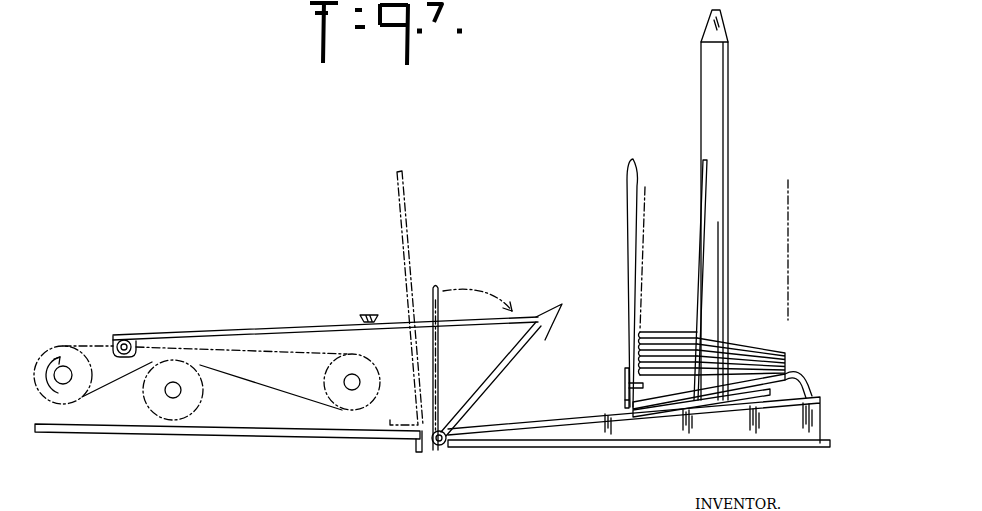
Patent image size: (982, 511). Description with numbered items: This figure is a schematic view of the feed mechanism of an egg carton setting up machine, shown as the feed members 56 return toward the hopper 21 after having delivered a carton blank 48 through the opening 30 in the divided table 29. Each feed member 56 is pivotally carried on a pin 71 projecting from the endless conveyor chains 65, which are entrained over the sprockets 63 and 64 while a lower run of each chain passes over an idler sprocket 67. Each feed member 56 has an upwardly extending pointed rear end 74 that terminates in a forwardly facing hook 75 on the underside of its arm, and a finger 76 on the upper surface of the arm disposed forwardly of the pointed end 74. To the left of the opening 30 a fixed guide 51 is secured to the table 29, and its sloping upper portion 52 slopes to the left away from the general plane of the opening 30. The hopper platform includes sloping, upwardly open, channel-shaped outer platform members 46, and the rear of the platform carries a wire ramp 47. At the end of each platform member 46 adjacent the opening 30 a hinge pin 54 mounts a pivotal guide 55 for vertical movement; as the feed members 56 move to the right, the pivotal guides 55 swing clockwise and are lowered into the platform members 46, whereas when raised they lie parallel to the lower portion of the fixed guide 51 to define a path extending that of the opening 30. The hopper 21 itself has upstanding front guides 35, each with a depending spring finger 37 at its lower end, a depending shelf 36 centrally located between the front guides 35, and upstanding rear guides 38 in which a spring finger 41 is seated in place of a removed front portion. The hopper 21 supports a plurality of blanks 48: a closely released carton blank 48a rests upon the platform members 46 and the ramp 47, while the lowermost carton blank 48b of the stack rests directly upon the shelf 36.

The hopper 21 is at (752, 122).
The divided table 29 is at (186, 437).
The blank receiving passage or opening 30 is at (422, 455).
The front guides 35 is at (628, 233).
The depending shelf 36 is at (625, 385).
The depending spring finger 37 is at (627, 400).
The rear guides 38 is at (718, 219).
The spring finger 41 is at (697, 339).
The outer platform members 46 is at (790, 430).
The wire ramp 47 is at (800, 379).
The carton blank 48 is at (740, 352).
The closely released carton blank 48a is at (713, 398).
The lowermost carton blank 48b is at (665, 378).
The fixed guide 51 is at (415, 372).
The sloping upper portion 52 is at (405, 197).
The hinge pin 54 is at (442, 447).
The pivotal guide 55 is at (440, 381).
The feed member 56 is at (268, 328).
The sprockets 63 is at (57, 344).
The sprockets 64 is at (377, 370).
The endless conveyor chains 65 is at (268, 388).
The idler sprocket 67 is at (147, 394).
The pins 71 is at (124, 341).
The pointed rear end 74 is at (552, 305).
The hook 75 is at (547, 336).
The finger 76 is at (370, 313).